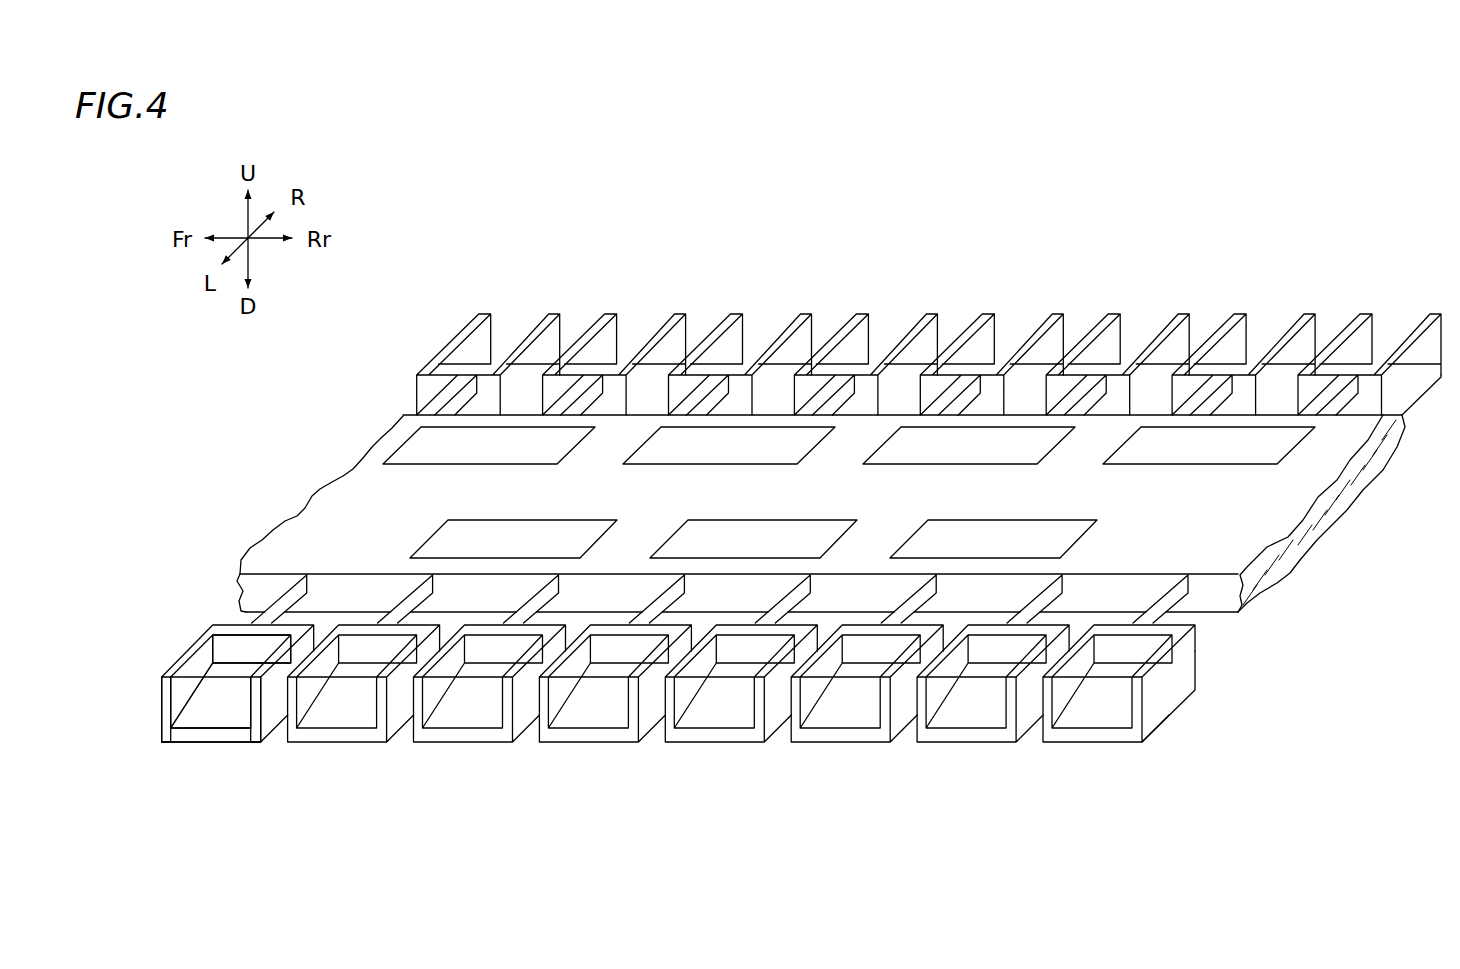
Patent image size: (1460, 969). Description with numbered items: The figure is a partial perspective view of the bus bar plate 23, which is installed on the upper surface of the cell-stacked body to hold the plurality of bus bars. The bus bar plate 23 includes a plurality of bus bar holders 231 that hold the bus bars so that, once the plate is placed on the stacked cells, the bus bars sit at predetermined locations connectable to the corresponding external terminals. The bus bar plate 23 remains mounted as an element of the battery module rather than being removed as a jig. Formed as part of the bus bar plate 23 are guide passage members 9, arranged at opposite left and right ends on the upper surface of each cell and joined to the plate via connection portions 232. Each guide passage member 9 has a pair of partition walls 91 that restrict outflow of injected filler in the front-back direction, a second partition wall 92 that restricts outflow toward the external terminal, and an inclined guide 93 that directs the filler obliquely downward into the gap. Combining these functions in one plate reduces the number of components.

The guide passage member 9 is at (838, 744).
The bus bar plate 23 is at (356, 424).
The bus bar holder 231 is at (502, 538).
The connection portion 232 is at (385, 600).
The partition wall 91 is at (158, 712).
The second partition wall 92 is at (248, 650).
The inclined guide 93 is at (220, 712).